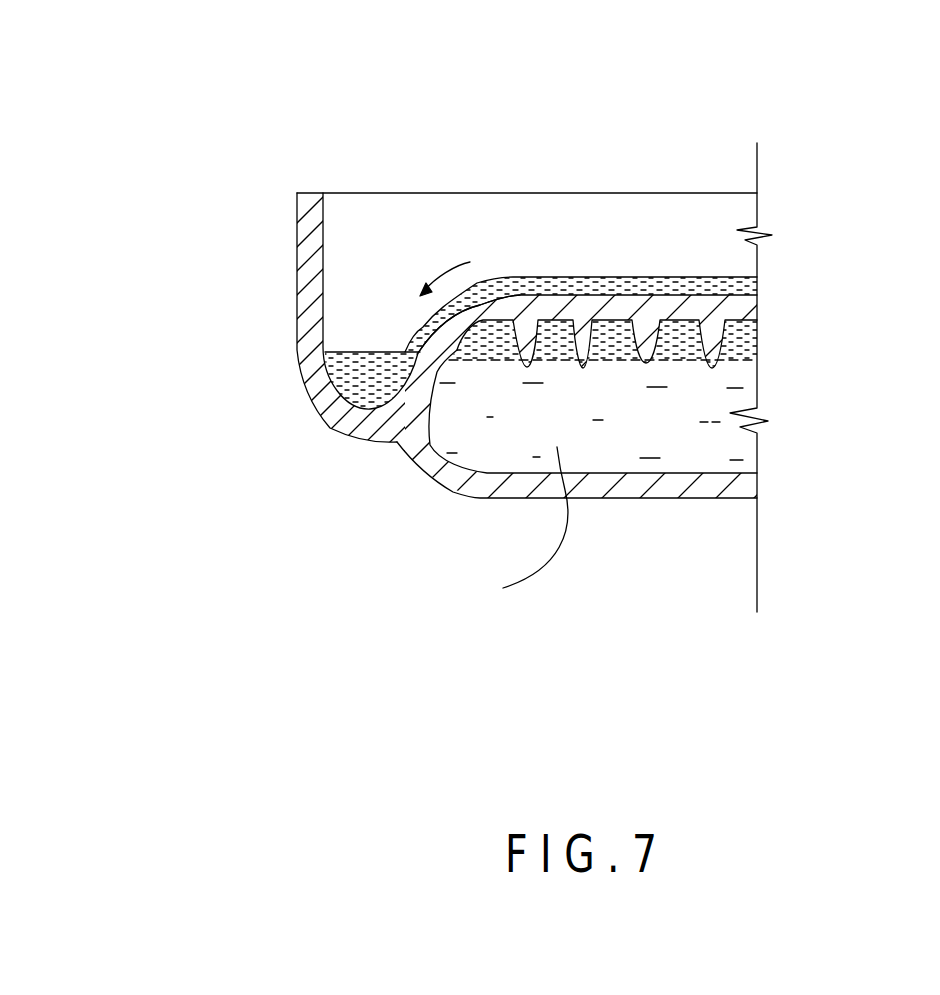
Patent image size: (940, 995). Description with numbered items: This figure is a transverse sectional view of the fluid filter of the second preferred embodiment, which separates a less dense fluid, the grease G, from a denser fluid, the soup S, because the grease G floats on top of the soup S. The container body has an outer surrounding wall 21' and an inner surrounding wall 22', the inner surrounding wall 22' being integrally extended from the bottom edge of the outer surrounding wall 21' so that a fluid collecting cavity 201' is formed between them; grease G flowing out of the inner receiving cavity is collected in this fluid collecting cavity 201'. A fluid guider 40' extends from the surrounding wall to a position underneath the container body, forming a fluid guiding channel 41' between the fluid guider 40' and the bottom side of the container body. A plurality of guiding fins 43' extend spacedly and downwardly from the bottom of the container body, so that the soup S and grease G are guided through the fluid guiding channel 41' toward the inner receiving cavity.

The outer surrounding wall 21' is at (378, 350).
The fluid collecting cavity 201' is at (372, 217).
The inner surrounding wall 22' is at (488, 204).
The grease G is at (647, 287).
The guiding fins 43' is at (663, 334).
The fluid guiding channel 41' is at (662, 431).
The fluid guider 40' is at (530, 357).
The soup S is at (515, 532).